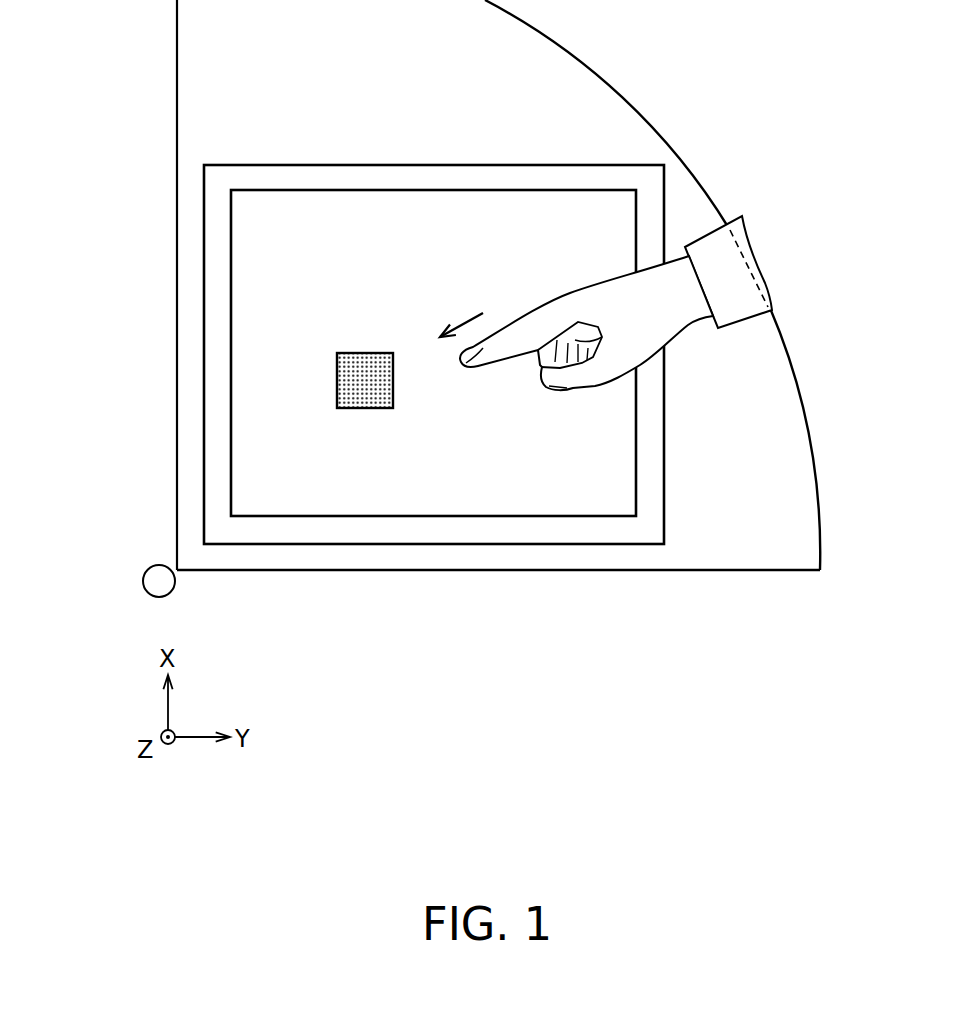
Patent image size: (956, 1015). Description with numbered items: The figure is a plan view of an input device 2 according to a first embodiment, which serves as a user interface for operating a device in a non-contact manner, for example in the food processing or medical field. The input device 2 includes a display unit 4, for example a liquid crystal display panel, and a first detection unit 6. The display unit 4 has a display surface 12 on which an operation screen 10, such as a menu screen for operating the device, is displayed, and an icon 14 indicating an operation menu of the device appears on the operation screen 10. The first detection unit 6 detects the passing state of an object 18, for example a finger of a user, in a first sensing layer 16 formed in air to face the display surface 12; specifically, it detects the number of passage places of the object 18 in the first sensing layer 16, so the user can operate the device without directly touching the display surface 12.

The input device 2 is at (672, 137).
The display unit 4 is at (373, 164).
The first detection unit 6 is at (161, 587).
The operation screen 10 is at (472, 313).
The display surface 12 is at (315, 206).
The icon 14 is at (353, 383).
The first sensing layer 16 is at (177, 107).
The object 18 is at (511, 323).